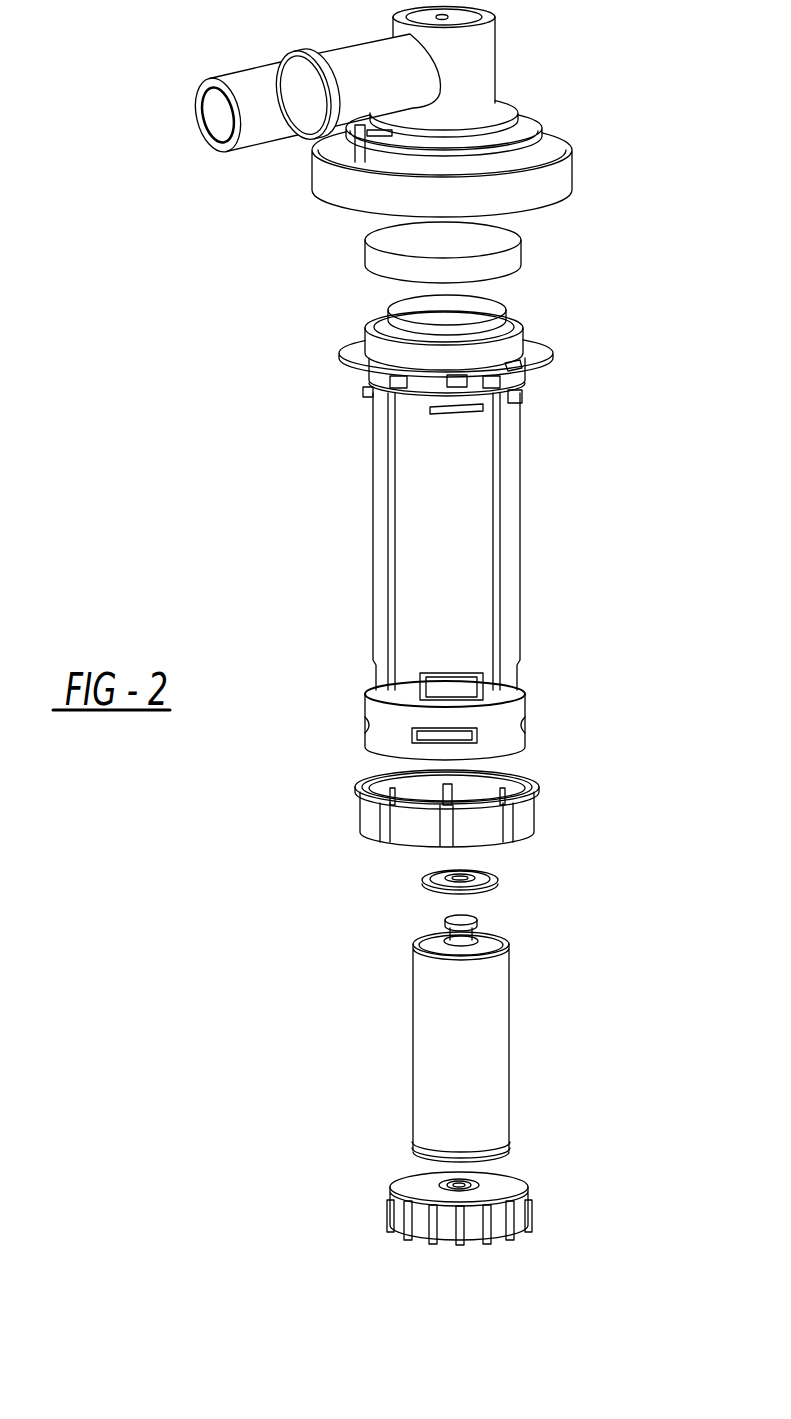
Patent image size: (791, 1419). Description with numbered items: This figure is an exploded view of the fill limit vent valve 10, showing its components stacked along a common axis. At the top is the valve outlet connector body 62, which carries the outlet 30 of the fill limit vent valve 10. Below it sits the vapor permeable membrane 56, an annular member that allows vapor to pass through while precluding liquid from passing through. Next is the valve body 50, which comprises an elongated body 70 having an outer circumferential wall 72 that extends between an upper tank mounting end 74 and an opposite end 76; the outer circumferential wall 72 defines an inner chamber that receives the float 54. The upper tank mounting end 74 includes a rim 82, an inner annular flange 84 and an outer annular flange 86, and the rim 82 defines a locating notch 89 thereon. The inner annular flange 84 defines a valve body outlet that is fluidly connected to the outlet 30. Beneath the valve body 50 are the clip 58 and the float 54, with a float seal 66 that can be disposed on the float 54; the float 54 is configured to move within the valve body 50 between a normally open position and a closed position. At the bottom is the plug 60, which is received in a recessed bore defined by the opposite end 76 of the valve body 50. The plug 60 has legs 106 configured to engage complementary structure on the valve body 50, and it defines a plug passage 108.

The fill limit vent valve 10 is at (630, 1222).
The outlet 30 is at (210, 105).
The valve outlet connector body 62 is at (328, 172).
The vapor permeable membrane 56 is at (365, 250).
The upper tank mounting end 74 is at (411, 378).
The inner annular flange 84 is at (412, 305).
The outer annular flange 86 is at (378, 344).
The rim 82 is at (545, 360).
The locating notch 89 is at (522, 368).
The valve body 50 is at (382, 418).
The elongated body 70 is at (378, 513).
The outer circumferential wall 72 is at (380, 600).
The opposite end 76 is at (357, 733).
The clip 58 is at (372, 820).
The float seal 66 is at (497, 880).
The float 54 is at (432, 1018).
The plug 60 is at (458, 1186).
The plug passage 108 is at (462, 1182).
The legs 106 is at (518, 1210).